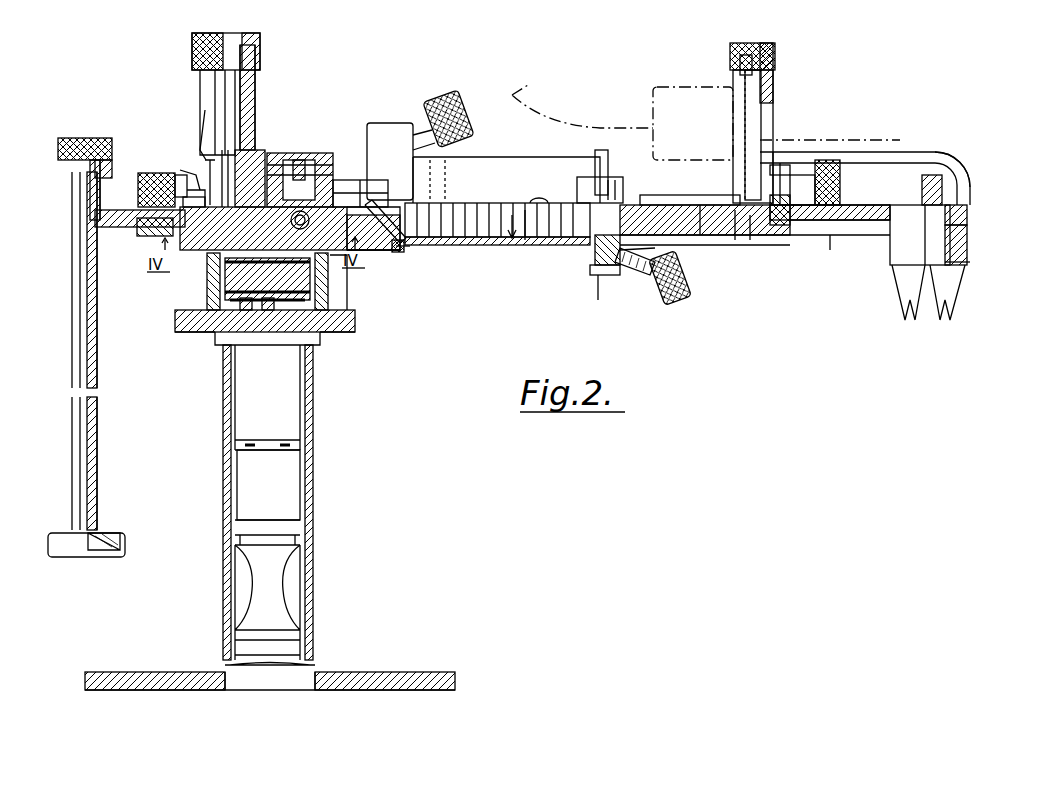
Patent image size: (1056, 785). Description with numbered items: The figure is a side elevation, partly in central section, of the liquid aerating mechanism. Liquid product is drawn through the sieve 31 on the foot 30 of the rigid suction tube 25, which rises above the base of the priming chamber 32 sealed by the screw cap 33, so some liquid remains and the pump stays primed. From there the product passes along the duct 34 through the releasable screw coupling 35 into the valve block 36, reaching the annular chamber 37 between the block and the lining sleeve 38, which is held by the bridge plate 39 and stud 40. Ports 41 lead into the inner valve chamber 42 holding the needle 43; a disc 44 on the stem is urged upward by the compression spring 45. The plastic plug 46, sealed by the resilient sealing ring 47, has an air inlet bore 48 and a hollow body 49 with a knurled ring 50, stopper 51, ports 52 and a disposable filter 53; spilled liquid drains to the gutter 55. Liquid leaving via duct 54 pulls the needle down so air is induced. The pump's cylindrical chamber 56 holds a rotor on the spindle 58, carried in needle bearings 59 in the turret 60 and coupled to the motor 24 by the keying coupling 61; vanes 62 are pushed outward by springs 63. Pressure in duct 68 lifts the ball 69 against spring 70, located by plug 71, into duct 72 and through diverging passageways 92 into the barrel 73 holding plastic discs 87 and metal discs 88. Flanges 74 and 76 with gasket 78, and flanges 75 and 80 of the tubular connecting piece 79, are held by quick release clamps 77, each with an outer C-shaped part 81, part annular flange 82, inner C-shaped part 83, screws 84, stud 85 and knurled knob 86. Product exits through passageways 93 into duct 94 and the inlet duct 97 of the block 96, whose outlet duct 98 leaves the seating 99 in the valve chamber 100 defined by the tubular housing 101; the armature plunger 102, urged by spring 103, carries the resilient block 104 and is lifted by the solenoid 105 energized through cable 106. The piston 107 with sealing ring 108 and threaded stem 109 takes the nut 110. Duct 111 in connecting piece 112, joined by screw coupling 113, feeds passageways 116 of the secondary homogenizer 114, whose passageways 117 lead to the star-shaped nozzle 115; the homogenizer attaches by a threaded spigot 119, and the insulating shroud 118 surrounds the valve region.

The motor 24 is at (455, 685).
The suction tube 25 is at (97, 410).
The foot 30 is at (110, 537).
The sieve 31 is at (90, 550).
The priming chamber 32 is at (95, 190).
The screw cap 33 is at (78, 140).
The duct 34 is at (138, 222).
The releasable screw coupling 35 is at (150, 178).
The valve block 36 is at (200, 248).
The annular chamber 37 is at (310, 152).
The lining sleeve 38 is at (255, 152).
The bridge plate 39 is at (308, 160).
The stud 40 is at (290, 155).
The ports 41 is at (150, 232).
The inner valve chamber 42 is at (292, 160).
The needle 43 is at (186, 194).
The disc 44 is at (207, 280).
The helically coiled compression spring 45 is at (320, 275).
The plug 46 is at (180, 168).
The resilient sealing ring 47 is at (225, 150).
The air inlet bore 48 is at (210, 158).
The hollow body 49 is at (256, 78).
The knurled ring 50 is at (192, 48).
The stopper 51 is at (252, 52).
The ports 52 is at (200, 110).
The disposable filter 53 is at (200, 80).
The duct 54 is at (215, 338).
The gutter 55 is at (200, 140).
The cylindrical chamber 56 is at (200, 295).
The spindle 58 is at (272, 305).
The needle bearings 59 is at (288, 404).
The turret 60 is at (313, 455).
The keying coupling 61 is at (283, 482).
The vanes 62 is at (335, 290).
The helically coiled compression springs 63 is at (268, 308).
The duct 68 is at (352, 252).
The ball 69 is at (357, 244).
The helically coiled compression spring 70 is at (345, 182).
The plug 71 is at (335, 180).
The duct 72 is at (365, 205).
The cylindrical barrel 73 is at (470, 245).
The annular flange 74 is at (405, 250).
The annular flange 75 is at (598, 152).
The annular flange 76 is at (397, 252).
The quick release clamp 77 is at (383, 125).
The annular gasket 78 is at (400, 252).
The tubular connecting piece 79 is at (700, 235).
The flange 80 is at (610, 165).
The outer C-shaped part 81 is at (622, 262).
The part annular flange 82 is at (590, 278).
The inner C-shaped part 83 is at (595, 252).
The screws 84 is at (560, 205).
The stud 85 is at (635, 272).
The knurled knob 86 is at (680, 288).
The plastic discs 87 is at (505, 240).
The metal discs 88 is at (525, 245).
The diverging passageways 92 is at (388, 205).
The passageways 93 is at (660, 208).
The duct 94 is at (705, 205).
The block 96 is at (762, 240).
The inlet duct 97 is at (740, 238).
The outlet duct 98 is at (778, 232).
The seating 99 is at (802, 190).
The valve chamber 100 is at (775, 130).
The tubular housing 101 is at (790, 160).
The armature plunger 102 is at (750, 130).
The helically coiled compression spring 103 is at (840, 152).
The block of resilient material 104 is at (845, 166).
The solenoid 105 is at (790, 100).
The cable 106 is at (548, 110).
The piston 107 is at (773, 85).
The sealing ring 108 is at (745, 92).
The screw threaded stem 109 is at (740, 65).
The nut 110 is at (730, 52).
The duct 111 is at (845, 238).
The connecting piece 112 is at (870, 222).
The releasable screw coupling 113 is at (820, 225).
The secondary homogenizer 114 is at (968, 236).
The star-shaped decorating nozzle 115 is at (950, 310).
The diverging passageways 116 is at (968, 212).
The passageways 117 is at (965, 265).
The insulating tubular shroud 118 is at (948, 157).
The screw threaded spigot 119 is at (945, 185).